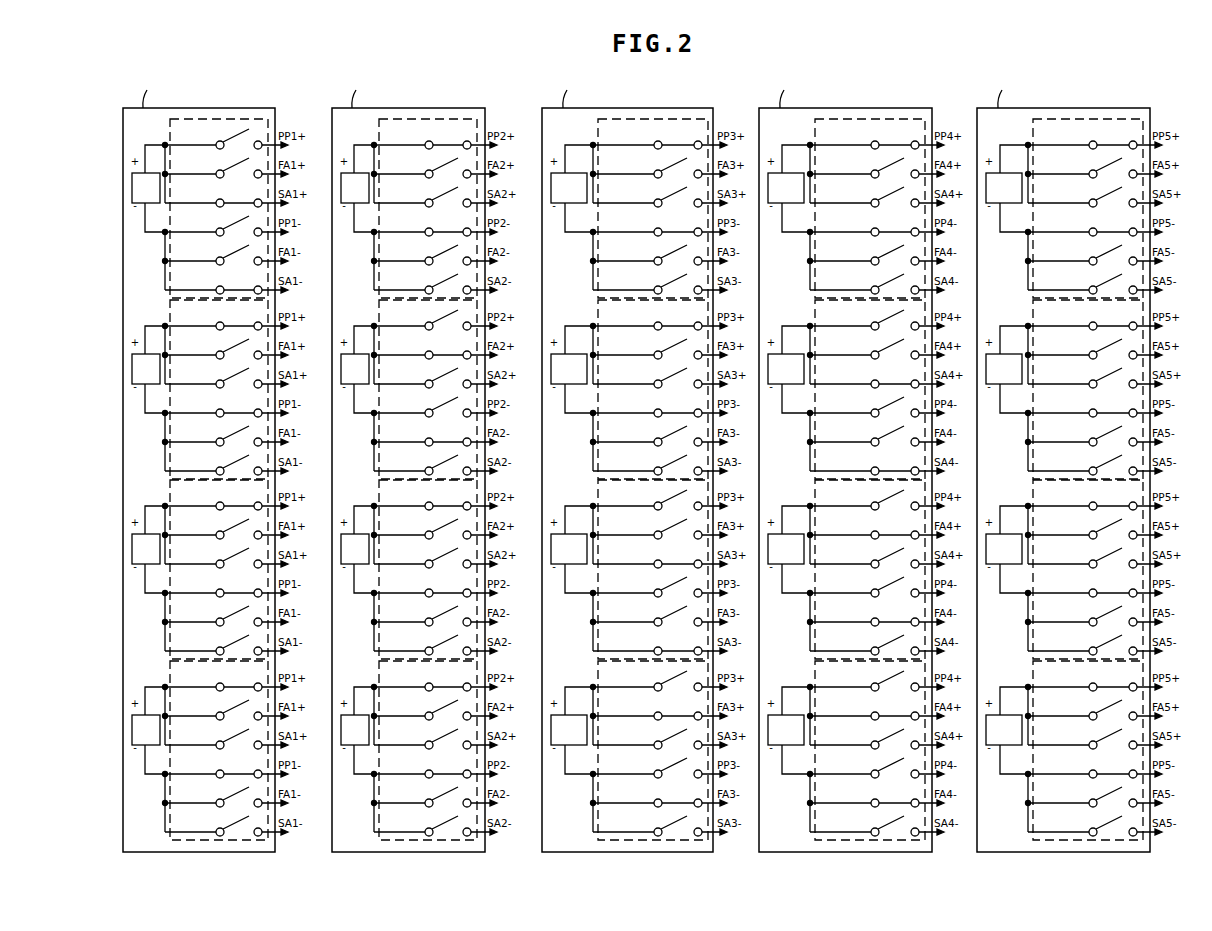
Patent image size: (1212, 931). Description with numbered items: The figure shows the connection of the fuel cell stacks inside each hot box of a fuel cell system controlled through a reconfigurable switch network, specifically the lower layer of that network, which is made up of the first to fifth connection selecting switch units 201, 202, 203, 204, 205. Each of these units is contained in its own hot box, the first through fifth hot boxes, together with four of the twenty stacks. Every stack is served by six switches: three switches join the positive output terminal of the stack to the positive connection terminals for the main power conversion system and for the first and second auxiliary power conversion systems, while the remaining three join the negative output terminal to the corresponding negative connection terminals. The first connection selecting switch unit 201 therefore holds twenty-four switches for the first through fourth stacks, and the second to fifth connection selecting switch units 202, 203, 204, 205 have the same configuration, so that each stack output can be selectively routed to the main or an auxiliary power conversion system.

The first connection selecting switch unit 201 is at (248, 107).
The second connection selecting switch unit 202 is at (459, 107).
The third connection selecting switch unit 203 is at (687, 107).
The fourth connection selecting switch unit 204 is at (904, 107).
The fifth connection selecting switch unit 205 is at (1122, 107).